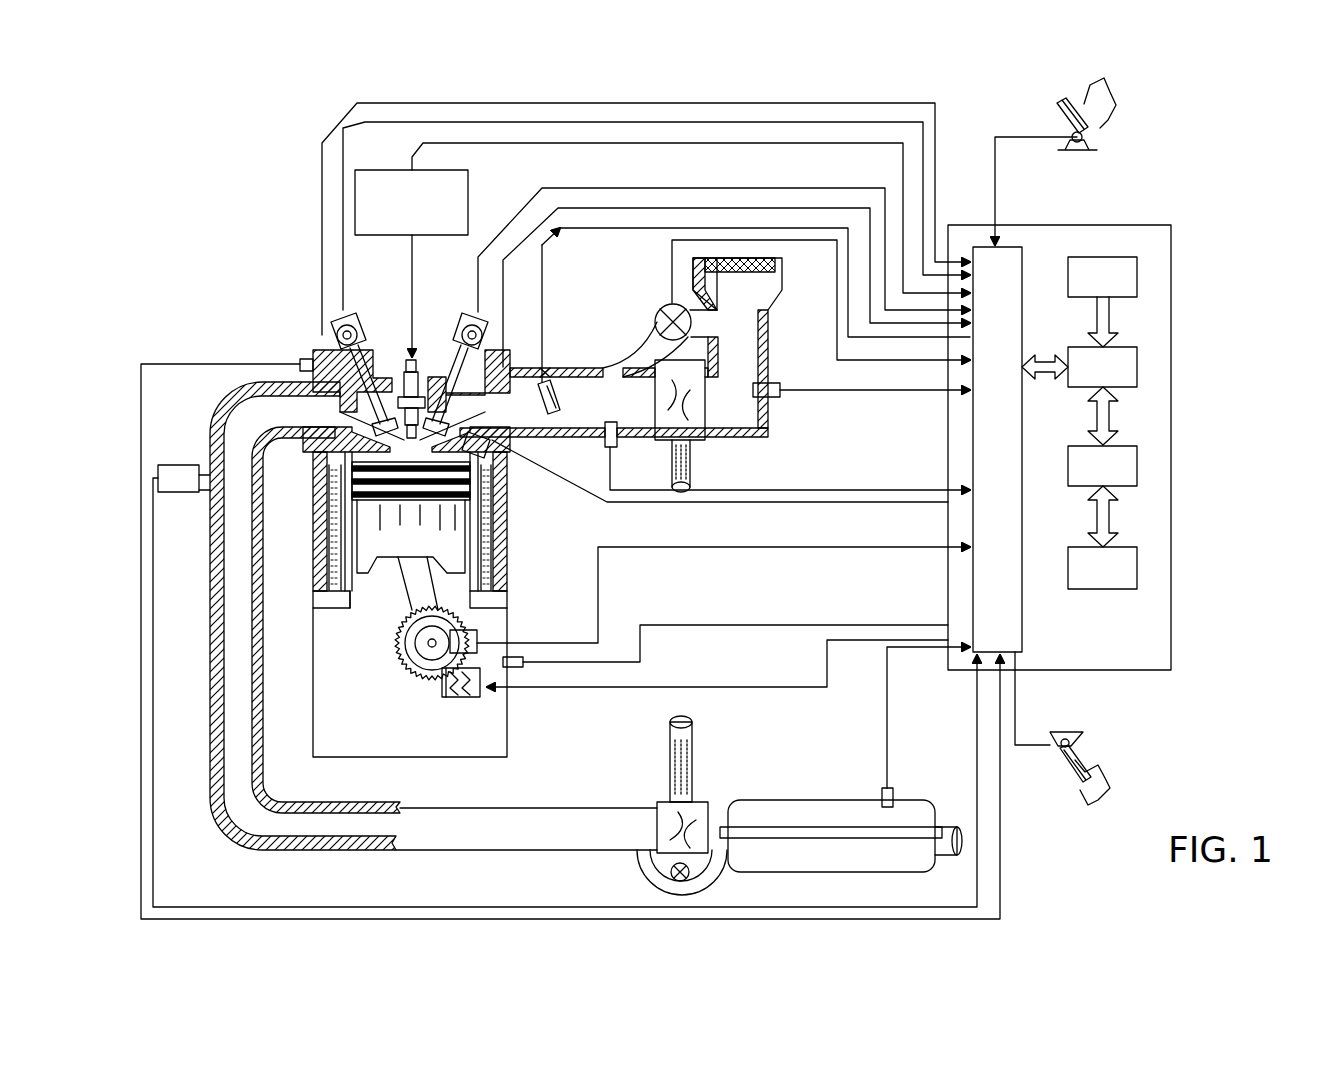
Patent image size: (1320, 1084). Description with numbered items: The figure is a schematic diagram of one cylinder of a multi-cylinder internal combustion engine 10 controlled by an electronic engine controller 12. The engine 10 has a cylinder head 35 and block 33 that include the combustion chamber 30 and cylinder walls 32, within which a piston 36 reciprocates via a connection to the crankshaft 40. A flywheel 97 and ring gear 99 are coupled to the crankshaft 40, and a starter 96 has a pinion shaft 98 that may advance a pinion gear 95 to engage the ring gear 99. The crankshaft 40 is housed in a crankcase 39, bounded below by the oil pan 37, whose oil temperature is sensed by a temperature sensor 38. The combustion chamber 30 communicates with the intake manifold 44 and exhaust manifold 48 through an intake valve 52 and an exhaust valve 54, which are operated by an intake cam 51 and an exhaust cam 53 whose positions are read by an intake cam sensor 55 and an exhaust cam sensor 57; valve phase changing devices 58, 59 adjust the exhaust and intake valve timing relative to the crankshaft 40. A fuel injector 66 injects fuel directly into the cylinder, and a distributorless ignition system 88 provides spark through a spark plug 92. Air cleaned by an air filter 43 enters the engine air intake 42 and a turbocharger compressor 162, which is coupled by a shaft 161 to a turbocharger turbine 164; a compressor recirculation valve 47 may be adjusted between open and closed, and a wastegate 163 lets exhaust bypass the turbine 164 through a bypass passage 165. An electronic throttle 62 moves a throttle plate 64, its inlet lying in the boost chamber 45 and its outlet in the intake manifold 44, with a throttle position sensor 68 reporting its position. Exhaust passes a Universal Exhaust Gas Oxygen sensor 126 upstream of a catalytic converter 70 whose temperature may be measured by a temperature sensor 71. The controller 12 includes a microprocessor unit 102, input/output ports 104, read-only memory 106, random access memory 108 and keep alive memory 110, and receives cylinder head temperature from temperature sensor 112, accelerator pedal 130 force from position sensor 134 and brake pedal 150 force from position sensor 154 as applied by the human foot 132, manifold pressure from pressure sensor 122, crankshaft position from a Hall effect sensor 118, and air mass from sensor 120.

The internal combustion engine 10 is at (252, 302).
The electronic engine controller 12 is at (1172, 225).
The combustion chamber 30 is at (338, 545).
The cylinder walls 32 is at (357, 592).
The block 33 is at (310, 490).
The cylinder head 35 is at (312, 354).
The piston 36 is at (400, 548).
The oil pan 37 is at (507, 735).
The temperature sensor 38 is at (517, 662).
The crankcase 39 is at (333, 683).
The crankshaft 40 is at (412, 672).
The engine air intake 42 is at (628, 292).
The air filter 43 is at (748, 272).
The intake manifold 44 is at (532, 415).
The boost chamber 45 is at (628, 415).
The compressor recirculation valve 47 is at (660, 312).
The exhaust manifold 48 is at (292, 423).
The intake cam 51 is at (478, 322).
The intake valve 52 is at (452, 418).
The exhaust cam 53 is at (358, 330).
The exhaust valve 54 is at (355, 422).
The intake cam sensor 55 is at (484, 325).
The exhaust cam sensor 57 is at (333, 343).
The valve phase changing device 58 is at (357, 340).
The valve phase changing device 59 is at (470, 333).
The electronic throttle 62 is at (558, 400).
The throttle plate 64 is at (558, 414).
The fuel injector 66 is at (515, 455).
The throttle position sensor 68 is at (545, 372).
The catalytic converter 70 is at (760, 800).
The temperature sensor 71 is at (893, 795).
The distributorless ignition system 88 is at (372, 170).
The spark plug 92 is at (412, 355).
The pinion gear 95 is at (466, 697).
The starter 96 is at (478, 697).
The flywheel 97 is at (405, 640).
The pinion shaft 98 is at (450, 690).
The ring gear 99 is at (428, 680).
The microprocessor unit 102 is at (1137, 368).
The input/output ports 104 is at (1022, 253).
The read-only memory 106 is at (1137, 270).
The random access memory 108 is at (1137, 465).
The keep alive memory 110 is at (1137, 565).
The temperature sensor 112 is at (300, 364).
The Hall effect sensor 118 is at (477, 632).
The sensor 120 is at (778, 385).
The pressure sensor 122 is at (605, 440).
The Universal Exhaust Gas Oxygen sensor 126 is at (180, 465).
The accelerator pedal 130 is at (1062, 112).
The human foot 132 is at (1108, 95).
The position sensor 134 is at (1090, 137).
The brake pedal 150 is at (1085, 785).
The position sensor 154 is at (1052, 740).
The shaft 161 is at (672, 455).
The turbocharger compressor 162 is at (698, 430).
The wastegate 163 is at (684, 884).
The turbocharger turbine 164 is at (662, 800).
The bypass passage 165 is at (640, 862).